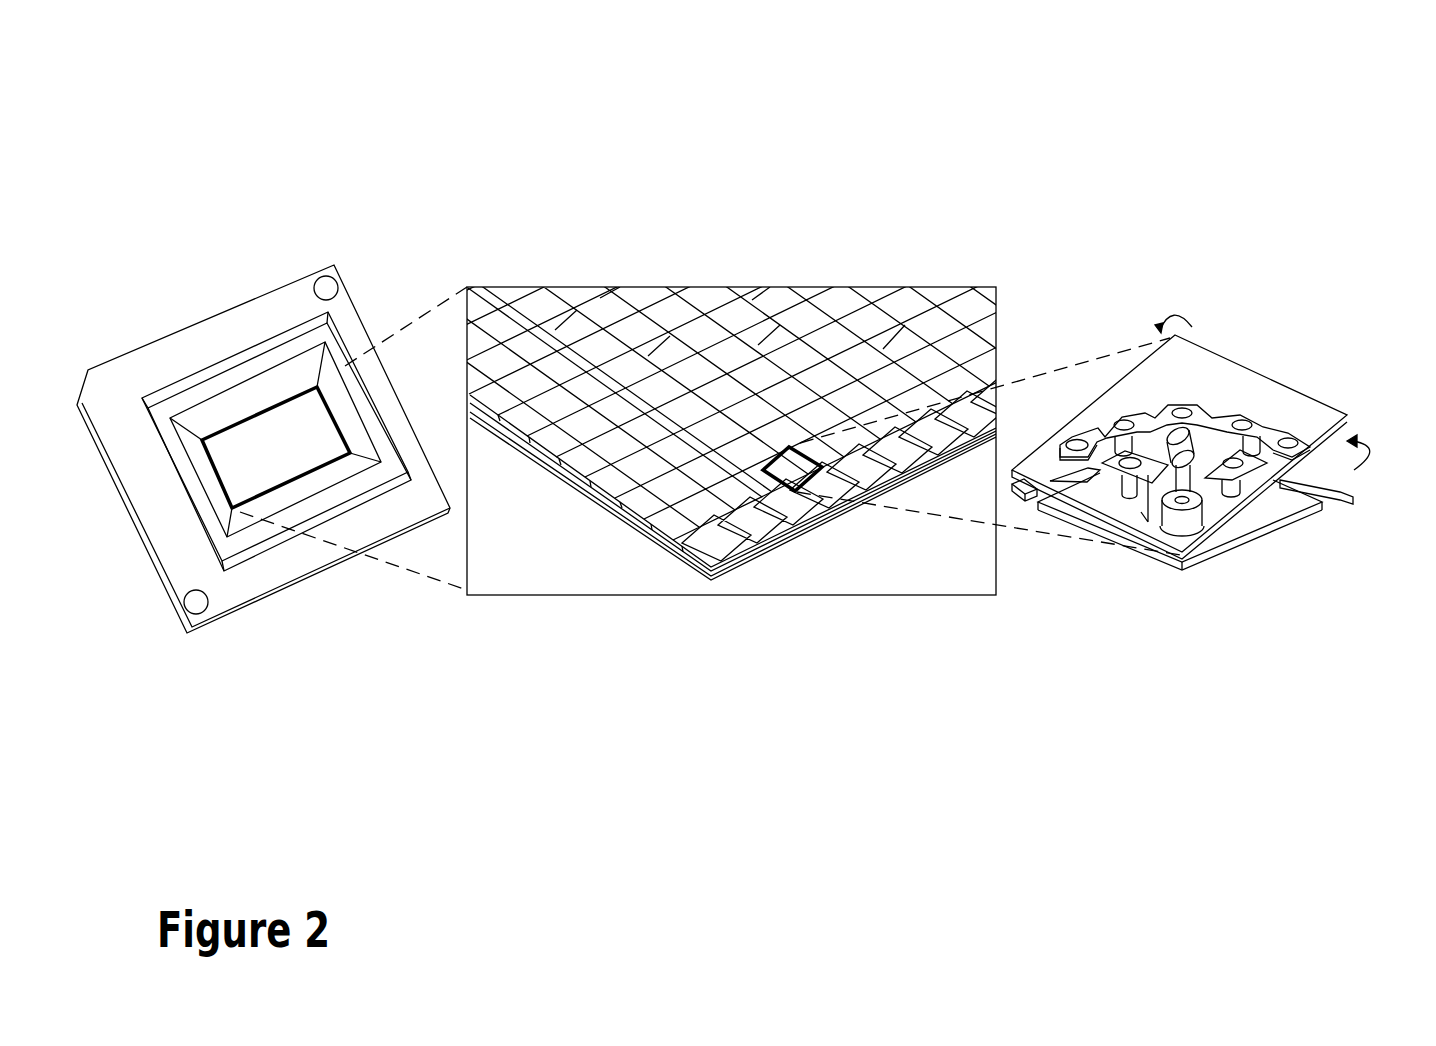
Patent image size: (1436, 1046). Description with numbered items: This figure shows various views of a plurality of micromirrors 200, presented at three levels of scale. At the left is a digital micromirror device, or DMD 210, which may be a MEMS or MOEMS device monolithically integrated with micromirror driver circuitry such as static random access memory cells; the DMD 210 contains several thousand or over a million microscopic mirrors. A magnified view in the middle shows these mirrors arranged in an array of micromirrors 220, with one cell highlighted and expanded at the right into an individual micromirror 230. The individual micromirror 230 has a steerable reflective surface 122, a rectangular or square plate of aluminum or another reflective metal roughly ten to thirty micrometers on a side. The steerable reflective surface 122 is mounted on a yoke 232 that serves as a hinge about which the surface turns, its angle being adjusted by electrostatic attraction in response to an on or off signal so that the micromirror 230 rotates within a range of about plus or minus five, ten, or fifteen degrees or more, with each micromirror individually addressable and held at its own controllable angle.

The plurality of micromirrors 200 is at (1288, 104).
The digital micromirror device (DMD) 210 is at (369, 264).
The array of micromirrors 220 is at (857, 268).
The individual micromirror 230 is at (1257, 338).
The steerable reflective surface 122 is at (1218, 436).
The yoke 232 is at (1237, 493).